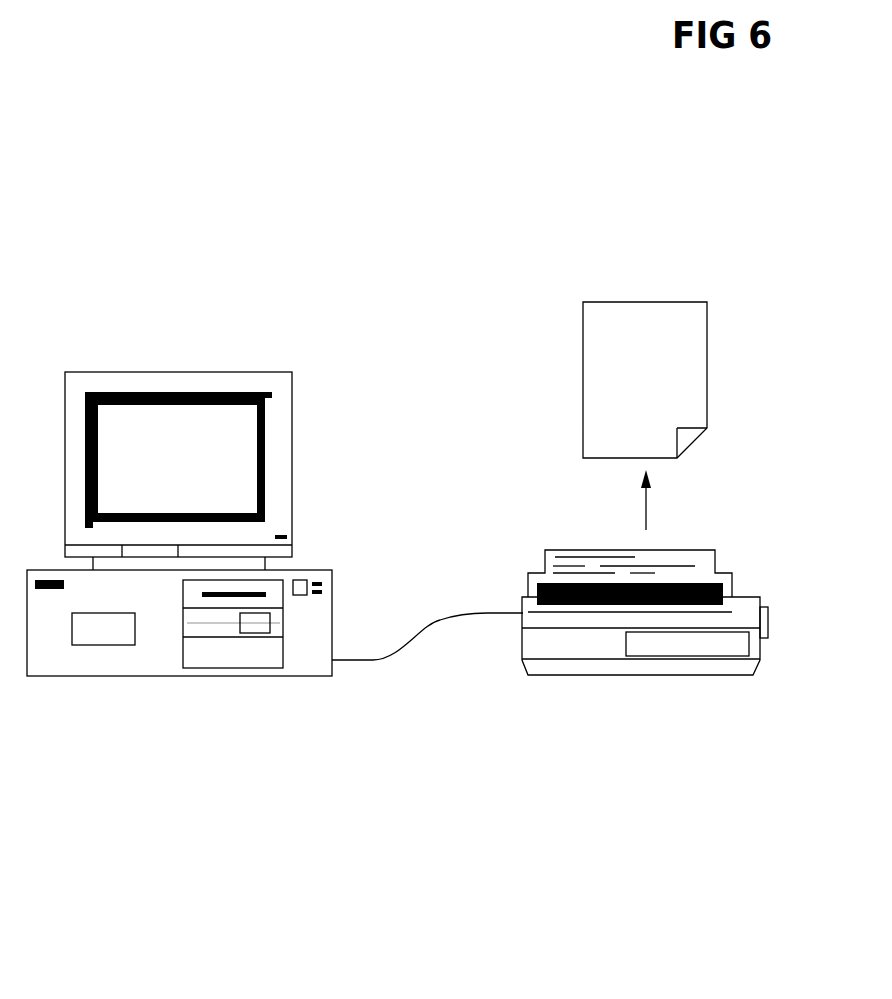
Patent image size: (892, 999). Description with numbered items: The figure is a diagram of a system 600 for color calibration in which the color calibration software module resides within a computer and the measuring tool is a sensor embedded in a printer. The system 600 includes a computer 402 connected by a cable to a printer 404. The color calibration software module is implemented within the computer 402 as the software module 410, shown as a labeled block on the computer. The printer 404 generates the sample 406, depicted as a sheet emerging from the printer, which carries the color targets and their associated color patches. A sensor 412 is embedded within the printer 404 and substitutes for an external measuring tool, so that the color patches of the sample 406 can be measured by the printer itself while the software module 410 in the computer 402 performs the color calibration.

The computer 402 is at (212, 676).
The printer 404 is at (645, 676).
The sample 406 is at (637, 302).
The software module 410 is at (130, 646).
The sensor 412 is at (745, 657).
The system 600 is at (434, 843).